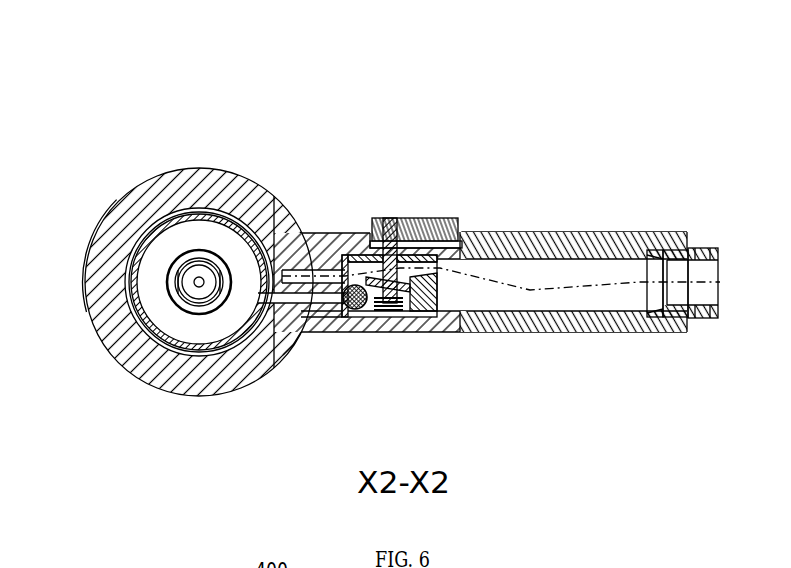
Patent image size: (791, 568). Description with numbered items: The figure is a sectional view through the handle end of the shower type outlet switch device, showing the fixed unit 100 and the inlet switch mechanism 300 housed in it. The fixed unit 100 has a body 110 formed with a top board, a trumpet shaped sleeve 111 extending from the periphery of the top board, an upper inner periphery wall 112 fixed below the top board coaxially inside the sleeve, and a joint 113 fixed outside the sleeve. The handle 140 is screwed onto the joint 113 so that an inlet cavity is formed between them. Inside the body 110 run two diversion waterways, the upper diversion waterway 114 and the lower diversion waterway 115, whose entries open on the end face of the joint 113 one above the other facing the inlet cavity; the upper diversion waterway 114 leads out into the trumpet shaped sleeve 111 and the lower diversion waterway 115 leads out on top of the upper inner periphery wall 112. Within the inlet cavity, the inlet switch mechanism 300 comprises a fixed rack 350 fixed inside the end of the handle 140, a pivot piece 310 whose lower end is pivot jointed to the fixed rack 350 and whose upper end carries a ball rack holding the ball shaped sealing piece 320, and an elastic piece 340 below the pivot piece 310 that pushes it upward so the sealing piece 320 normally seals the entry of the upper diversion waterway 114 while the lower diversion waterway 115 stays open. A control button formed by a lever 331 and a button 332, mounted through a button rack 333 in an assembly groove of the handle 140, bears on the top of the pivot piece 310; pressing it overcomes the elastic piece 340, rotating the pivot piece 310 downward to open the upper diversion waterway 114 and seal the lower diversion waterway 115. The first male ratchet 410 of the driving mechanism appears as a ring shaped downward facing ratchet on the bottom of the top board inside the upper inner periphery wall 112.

The fixed unit 100 is at (212, 143).
The body 110 is at (158, 168).
The trumpet shaped sleeve 111 is at (137, 195).
The upper inner periphery wall 112 is at (100, 242).
The joint 113 is at (310, 233).
The upper diversion waterway 114 is at (283, 348).
The lower diversion waterway 115 is at (308, 303).
The handle 140 is at (583, 232).
The inlet switch mechanism 300 is at (400, 168).
The pivot piece 310 is at (408, 330).
The sealing piece 320 is at (347, 307).
The lever 331 is at (410, 222).
The button 332 is at (430, 222).
The button rack 333 is at (358, 255).
The elastic piece 340 is at (385, 333).
The fixed rack 350 is at (462, 317).
The first male ratchet 410 is at (180, 300).